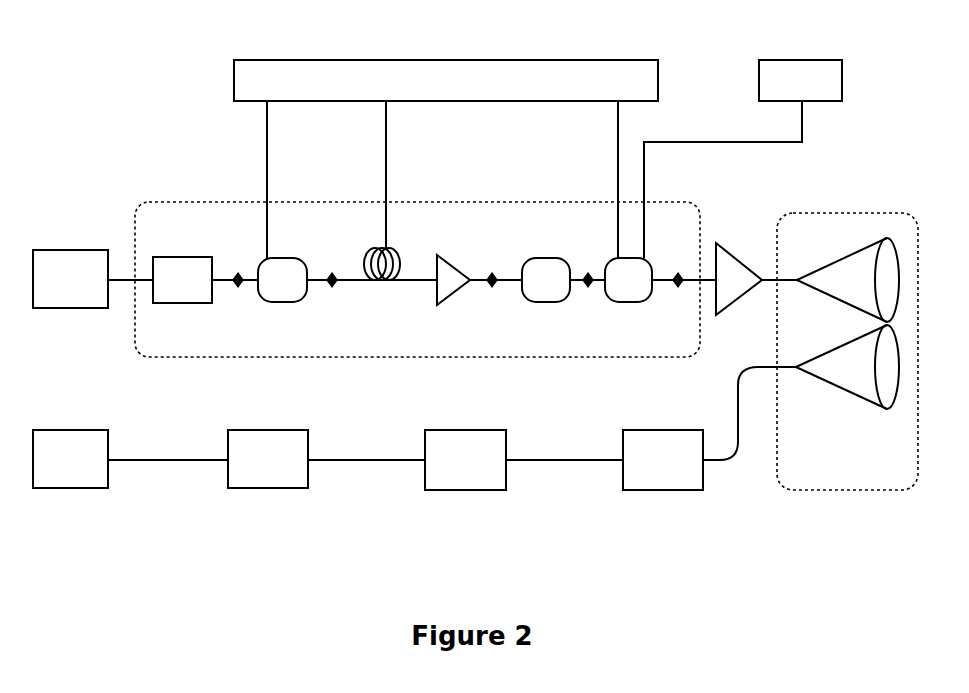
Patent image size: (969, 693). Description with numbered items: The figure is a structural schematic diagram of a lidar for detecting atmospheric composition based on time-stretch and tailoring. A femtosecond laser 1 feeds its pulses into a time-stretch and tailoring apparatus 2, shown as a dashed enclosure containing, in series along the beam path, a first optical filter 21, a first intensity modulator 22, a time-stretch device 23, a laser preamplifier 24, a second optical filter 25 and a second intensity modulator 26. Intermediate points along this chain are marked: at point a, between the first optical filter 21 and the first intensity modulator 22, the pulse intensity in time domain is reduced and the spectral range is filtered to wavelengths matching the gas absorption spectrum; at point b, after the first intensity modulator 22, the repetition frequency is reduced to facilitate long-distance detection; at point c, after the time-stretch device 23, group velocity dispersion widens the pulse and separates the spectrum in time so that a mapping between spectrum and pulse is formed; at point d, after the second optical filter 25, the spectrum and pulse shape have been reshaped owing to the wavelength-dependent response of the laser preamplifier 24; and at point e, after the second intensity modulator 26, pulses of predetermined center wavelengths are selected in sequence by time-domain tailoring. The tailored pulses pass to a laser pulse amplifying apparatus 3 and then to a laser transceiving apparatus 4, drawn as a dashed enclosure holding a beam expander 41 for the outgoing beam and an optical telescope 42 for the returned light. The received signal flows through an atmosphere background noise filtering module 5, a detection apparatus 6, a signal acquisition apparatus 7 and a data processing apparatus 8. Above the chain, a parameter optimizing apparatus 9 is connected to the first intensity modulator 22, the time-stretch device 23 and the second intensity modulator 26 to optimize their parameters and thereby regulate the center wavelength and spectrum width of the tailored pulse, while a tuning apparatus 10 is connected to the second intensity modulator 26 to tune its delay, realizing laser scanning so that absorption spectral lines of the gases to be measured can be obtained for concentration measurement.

The femtosecond laser 1 is at (70, 279).
The time-stretch and tailoring apparatus 2 is at (289, 203).
The first optical filter 21 is at (182, 280).
The first intensity modulator 22 is at (282, 201).
The time-stretch device 23 is at (382, 206).
The laser preamplifier 24 is at (453, 296).
The second optical filter 25 is at (546, 280).
The second intensity modulator 26 is at (703, 201).
The laser pulse amplifying apparatus 3 is at (739, 279).
The laser transceiving apparatus 4 is at (838, 212).
The beam expander 41 is at (848, 280).
The optical telescope 42 is at (847, 367).
The atmosphere background noise filtering module 5 is at (663, 460).
The detection apparatus 6 is at (465, 460).
The signal acquisition apparatus 7 is at (268, 459).
The data processing apparatus 8 is at (70, 459).
The parameter optimizing apparatus 9 is at (446, 80).
The tuning apparatus 10 is at (800, 80).
The point a is at (238, 296).
The point b is at (332, 296).
The point c is at (492, 296).
The point d is at (588, 296).
The point e is at (678, 296).